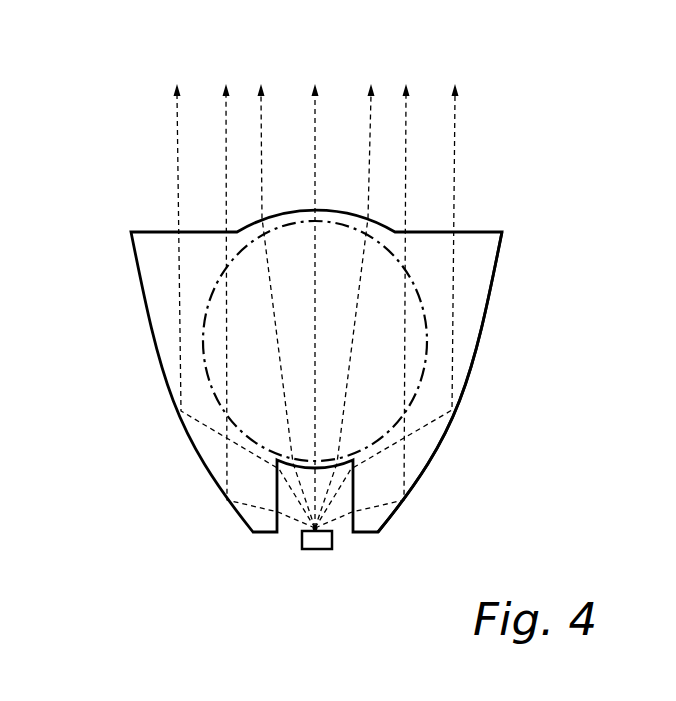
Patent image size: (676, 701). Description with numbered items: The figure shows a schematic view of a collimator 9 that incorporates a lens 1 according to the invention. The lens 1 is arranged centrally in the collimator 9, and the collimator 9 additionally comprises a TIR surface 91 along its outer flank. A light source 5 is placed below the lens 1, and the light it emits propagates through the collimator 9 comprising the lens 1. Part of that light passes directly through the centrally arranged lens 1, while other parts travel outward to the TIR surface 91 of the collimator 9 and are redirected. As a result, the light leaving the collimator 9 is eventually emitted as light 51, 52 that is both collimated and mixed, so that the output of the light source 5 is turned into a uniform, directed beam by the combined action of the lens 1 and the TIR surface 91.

The lens 1 is at (427, 335).
The light source 5 is at (313, 540).
The collimator 9 is at (147, 310).
The collimated and mixed light 51 is at (261, 126).
The collimated and mixed light 52 is at (455, 197).
The TIR surface 91 is at (433, 460).